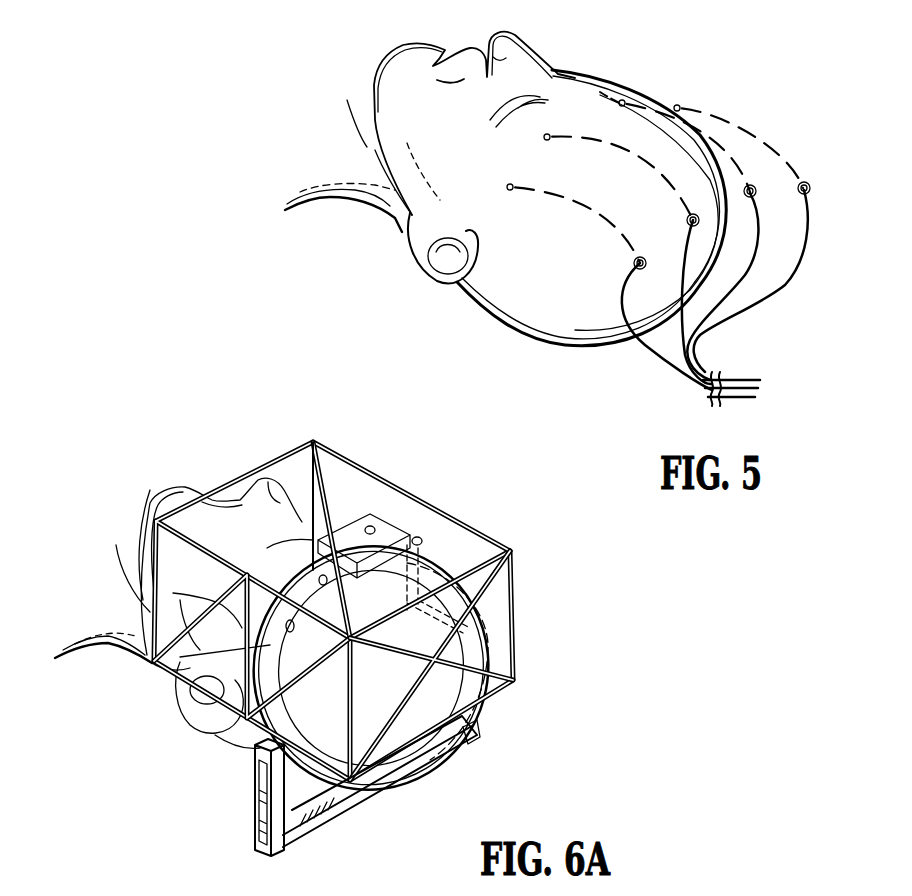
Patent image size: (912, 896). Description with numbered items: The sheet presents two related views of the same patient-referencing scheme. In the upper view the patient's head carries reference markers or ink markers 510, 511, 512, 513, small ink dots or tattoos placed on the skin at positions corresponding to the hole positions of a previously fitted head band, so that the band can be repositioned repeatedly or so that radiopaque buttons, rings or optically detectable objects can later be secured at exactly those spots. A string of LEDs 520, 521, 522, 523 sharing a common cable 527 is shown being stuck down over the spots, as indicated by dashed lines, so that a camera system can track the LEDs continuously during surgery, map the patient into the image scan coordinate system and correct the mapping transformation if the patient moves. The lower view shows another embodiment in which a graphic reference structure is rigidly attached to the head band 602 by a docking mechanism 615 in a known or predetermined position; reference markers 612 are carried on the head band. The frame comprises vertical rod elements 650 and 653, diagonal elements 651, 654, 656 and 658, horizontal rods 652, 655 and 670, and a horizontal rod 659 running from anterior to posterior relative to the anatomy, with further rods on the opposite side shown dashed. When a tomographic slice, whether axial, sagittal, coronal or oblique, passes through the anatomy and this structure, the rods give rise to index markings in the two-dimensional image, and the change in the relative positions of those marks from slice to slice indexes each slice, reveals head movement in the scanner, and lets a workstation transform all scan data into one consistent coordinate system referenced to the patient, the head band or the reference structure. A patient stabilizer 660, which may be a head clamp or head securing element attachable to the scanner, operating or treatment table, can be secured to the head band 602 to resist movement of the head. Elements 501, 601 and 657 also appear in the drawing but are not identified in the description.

In FIG. 5, the helmet 501 is at (457, 287).
In FIG. 5, the reference marker or ink marker 510 is at (507, 188).
In FIG. 5, the reference marker or ink marker 511 is at (544, 137).
In FIG. 5, the reference marker or ink marker 512 is at (622, 100).
In FIG. 5, the reference marker or ink marker 513 is at (678, 105).
In FIG. 5, the LED 520 is at (607, 280).
In FIG. 5, the LED 521 is at (696, 223).
In FIG. 5, the LED 522 is at (750, 185).
In FIG. 5, the LED 523 is at (804, 182).
In FIG. 5, the common cable 527 is at (687, 367).
In FIG. 6A, the base bracket 601 is at (474, 740).
In FIG. 6A, the head band 602 is at (150, 658).
In FIG. 6A, the reference marker 612 is at (420, 540).
In FIG. 6A, the docking mechanism 615 is at (390, 533).
In FIG. 6A, the vertical rod element 650 is at (503, 543).
In FIG. 6A, the diagonal element 651 is at (325, 482).
In FIG. 6A, the horizontal rod 652 is at (285, 452).
In FIG. 6A, the vertical rod element 653 is at (163, 550).
In FIG. 6A, the diagonal element 654 is at (240, 595).
In FIG. 6A, the horizontal rod 655 is at (183, 663).
In FIG. 6A, the diagonal element 656 is at (237, 753).
In FIG. 6A, the ear 657 is at (197, 717).
In FIG. 6A, the diagonal element 658 is at (513, 600).
In FIG. 6A, the horizontal rod 659 is at (515, 583).
In FIG. 6A, the patient stabilizer 660 is at (260, 830).
In FIG. 6A, the horizontal rod 670 is at (477, 722).